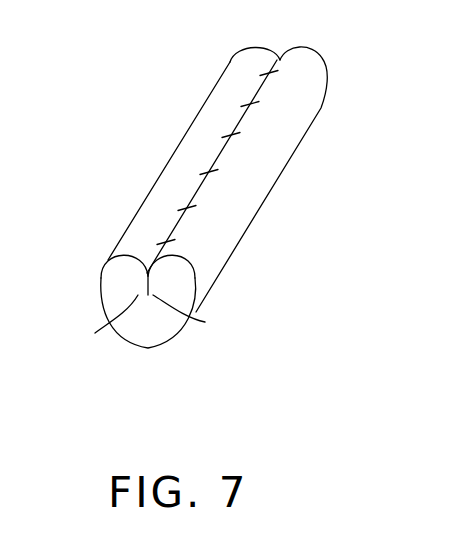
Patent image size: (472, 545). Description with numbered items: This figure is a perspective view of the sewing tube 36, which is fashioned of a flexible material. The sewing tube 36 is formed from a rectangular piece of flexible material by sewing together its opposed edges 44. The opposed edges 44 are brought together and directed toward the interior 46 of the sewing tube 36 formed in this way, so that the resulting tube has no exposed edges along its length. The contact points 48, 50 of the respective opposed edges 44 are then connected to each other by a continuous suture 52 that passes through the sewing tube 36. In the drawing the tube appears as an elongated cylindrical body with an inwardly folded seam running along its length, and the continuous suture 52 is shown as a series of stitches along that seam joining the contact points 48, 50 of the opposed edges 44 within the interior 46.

The sewing tube 36 is at (312, 172).
The opposed edges 44 is at (95, 333).
The interior 46 is at (140, 328).
The contact point 48 is at (147, 277).
The contact point 50 is at (147, 277).
The continuous suture 52 is at (269, 73).